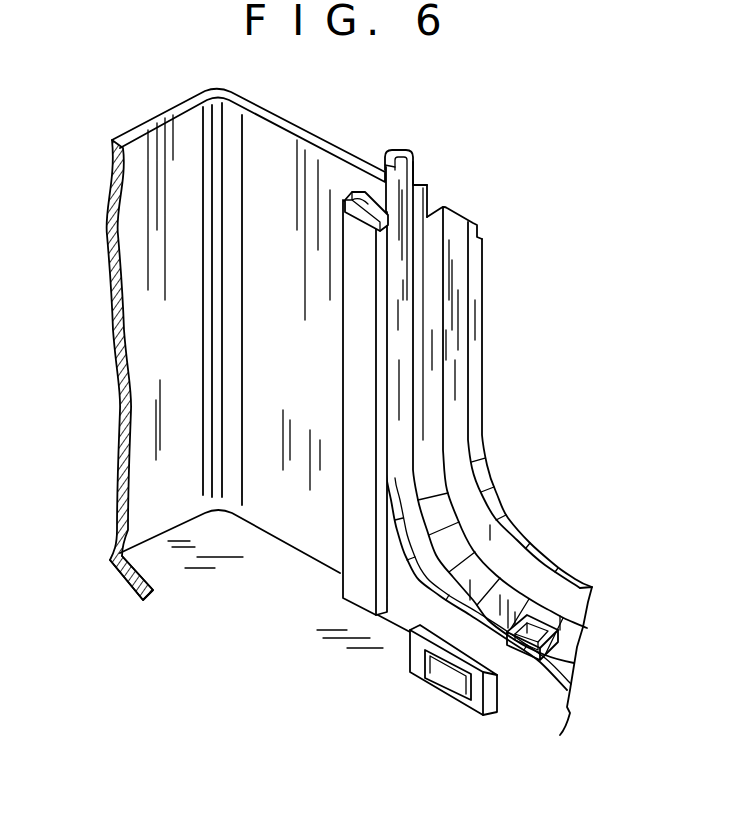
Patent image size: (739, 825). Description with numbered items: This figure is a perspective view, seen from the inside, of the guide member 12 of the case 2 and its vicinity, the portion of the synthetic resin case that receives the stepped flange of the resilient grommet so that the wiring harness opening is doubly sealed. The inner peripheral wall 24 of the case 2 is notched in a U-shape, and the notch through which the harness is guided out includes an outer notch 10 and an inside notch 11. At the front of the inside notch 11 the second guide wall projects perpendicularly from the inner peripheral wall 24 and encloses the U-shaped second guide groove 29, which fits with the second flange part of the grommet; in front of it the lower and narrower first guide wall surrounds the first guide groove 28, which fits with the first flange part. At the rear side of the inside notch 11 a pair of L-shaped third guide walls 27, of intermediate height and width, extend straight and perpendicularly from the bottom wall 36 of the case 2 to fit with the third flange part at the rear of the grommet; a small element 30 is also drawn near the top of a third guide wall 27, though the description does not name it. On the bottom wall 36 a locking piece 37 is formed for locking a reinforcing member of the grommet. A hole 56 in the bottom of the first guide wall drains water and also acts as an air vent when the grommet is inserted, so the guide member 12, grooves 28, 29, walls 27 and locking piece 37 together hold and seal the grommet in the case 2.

The case 2 is at (94, 156).
The outer notch 10 is at (473, 311).
The inside notch 11 is at (386, 202).
The guide member 12 is at (437, 141).
The inner peripheral wall 24 is at (160, 109).
The third guide wall 27 is at (343, 405).
The first guide groove 28 is at (450, 230).
The second guide groove 29 is at (384, 152).
The clip 30 is at (348, 230).
The bottom wall 36 is at (143, 580).
The locking piece 37 is at (410, 650).
The hole 56 is at (577, 648).